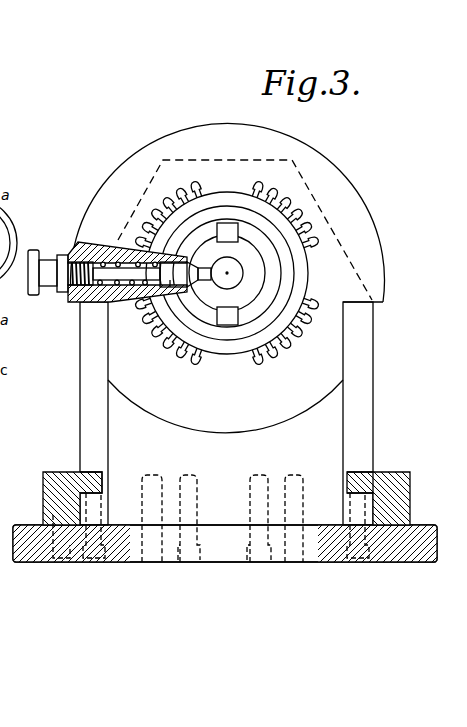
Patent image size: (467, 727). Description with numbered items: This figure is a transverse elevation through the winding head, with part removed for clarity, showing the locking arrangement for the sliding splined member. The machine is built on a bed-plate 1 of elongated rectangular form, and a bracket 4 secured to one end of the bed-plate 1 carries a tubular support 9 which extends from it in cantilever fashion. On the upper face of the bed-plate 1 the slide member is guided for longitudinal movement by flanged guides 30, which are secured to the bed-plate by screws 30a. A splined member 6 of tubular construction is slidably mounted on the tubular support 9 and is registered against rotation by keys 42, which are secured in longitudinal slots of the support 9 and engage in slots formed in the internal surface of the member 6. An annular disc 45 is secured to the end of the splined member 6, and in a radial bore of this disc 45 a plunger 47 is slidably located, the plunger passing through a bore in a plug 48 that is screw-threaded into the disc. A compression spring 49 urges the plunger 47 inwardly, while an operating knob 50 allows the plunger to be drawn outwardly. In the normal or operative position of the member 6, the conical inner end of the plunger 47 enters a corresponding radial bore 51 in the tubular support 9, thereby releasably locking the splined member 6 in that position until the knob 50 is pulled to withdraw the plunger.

The bed-plate 1 is at (407, 556).
The bracket 4 is at (320, 425).
The splined member 6 is at (272, 242).
The tubular support 9 is at (267, 276).
The flanged guides 30 is at (43, 487).
The screws 30a is at (60, 474).
The keys 42 is at (228, 223).
The annular disc 45 is at (189, 126).
The plunger 47 is at (165, 289).
The plug 48 is at (62, 292).
The compression spring 49 is at (80, 293).
The operating knob 50 is at (29, 286).
The radial bore 51 is at (208, 283).